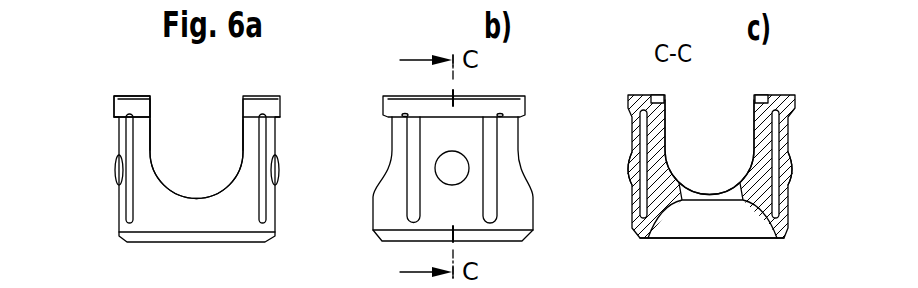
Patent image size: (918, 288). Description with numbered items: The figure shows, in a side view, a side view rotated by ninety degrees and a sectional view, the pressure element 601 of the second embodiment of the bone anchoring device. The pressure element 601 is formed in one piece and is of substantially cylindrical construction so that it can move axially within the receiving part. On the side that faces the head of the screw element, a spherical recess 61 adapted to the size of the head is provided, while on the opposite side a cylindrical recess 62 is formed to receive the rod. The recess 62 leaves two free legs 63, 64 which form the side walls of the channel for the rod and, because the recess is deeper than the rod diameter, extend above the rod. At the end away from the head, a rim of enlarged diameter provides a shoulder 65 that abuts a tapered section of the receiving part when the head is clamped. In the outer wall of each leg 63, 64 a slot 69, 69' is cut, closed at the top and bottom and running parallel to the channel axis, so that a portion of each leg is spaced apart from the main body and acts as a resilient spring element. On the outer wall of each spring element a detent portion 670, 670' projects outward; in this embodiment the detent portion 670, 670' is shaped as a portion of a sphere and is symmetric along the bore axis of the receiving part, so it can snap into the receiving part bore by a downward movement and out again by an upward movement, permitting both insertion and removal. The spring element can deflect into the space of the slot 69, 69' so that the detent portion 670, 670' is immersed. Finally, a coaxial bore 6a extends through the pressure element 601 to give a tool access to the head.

In FIG. 6a, the pressure element 601 is at (147, 82).
In FIG. 6b, the pressure element 601 is at (389, 87).
In FIG. 6c, the pressure element 601 is at (630, 89).
In FIG. 6a, the cylindrical recess 62 is at (240, 127).
In FIG. 6c, the cylindrical recess 62 is at (752, 125).
In FIG. 6a, the leg 63 is at (147, 133).
In FIG. 6a, the leg 64 is at (250, 141).
In FIG. 6a, the shoulder 65 is at (118, 120).
In FIG. 6a, the detent portion 670 is at (89, 173).
In FIG. 6b, the detent portion 670 is at (401, 154).
In FIG. 6c, the detent portion 670 is at (595, 167).
In FIG. 6a, the detent portion 670' is at (312, 174).
In FIG. 6c, the detent portion 670' is at (825, 169).
In FIG. 6a, the slot 69 is at (97, 177).
In FIG. 6c, the slot 69 is at (611, 173).
In FIG. 6a, the slot 69' is at (300, 171).
In FIG. 6b, the slot 69' is at (450, 194).
In FIG. 6c, the slot 69' is at (805, 181).
In FIG. 6c, the coaxial bore 6a is at (682, 201).
In FIG. 6c, the spherical recess 61 is at (757, 207).